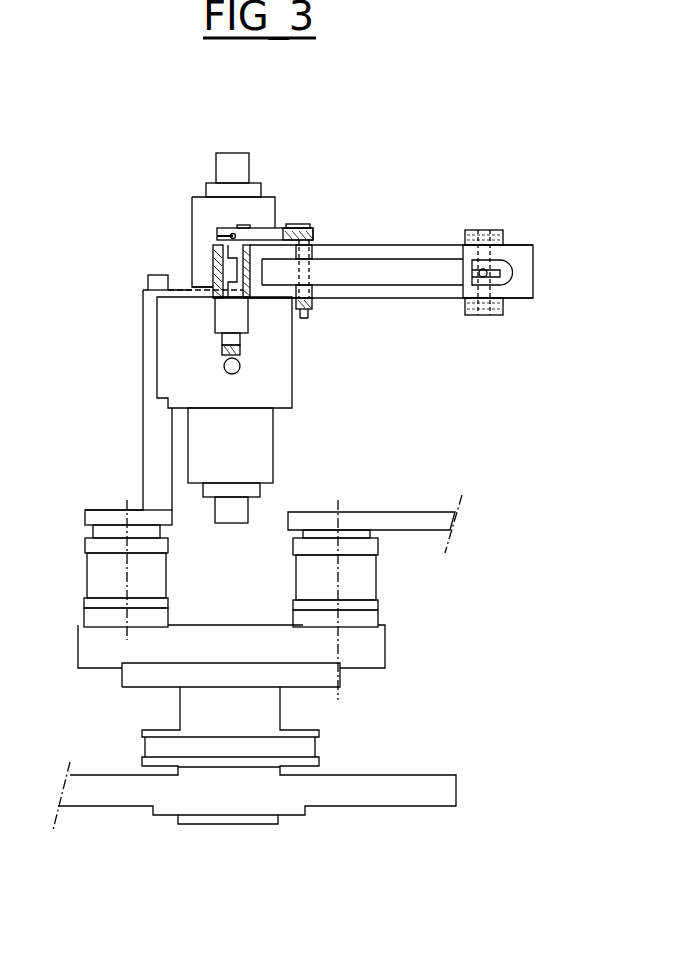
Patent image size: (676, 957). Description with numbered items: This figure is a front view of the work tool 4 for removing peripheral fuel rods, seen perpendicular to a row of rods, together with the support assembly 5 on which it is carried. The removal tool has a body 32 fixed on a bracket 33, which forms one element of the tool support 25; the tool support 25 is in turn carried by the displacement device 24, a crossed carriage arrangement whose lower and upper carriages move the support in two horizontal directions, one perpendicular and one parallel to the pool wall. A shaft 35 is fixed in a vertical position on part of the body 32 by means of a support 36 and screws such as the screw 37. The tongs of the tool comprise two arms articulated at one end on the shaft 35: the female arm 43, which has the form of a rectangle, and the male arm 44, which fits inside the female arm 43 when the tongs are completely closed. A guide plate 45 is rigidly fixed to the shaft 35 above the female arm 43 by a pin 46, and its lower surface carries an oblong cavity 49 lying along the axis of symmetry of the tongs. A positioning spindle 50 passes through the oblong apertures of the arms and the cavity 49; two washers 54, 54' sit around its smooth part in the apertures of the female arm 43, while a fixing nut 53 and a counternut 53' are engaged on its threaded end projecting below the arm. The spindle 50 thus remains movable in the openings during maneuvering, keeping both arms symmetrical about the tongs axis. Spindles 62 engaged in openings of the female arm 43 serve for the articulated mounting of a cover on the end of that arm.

The machining head assembly 4 is at (240, 134).
The support assembly 5 is at (465, 449).
The displacement device 24 is at (338, 743).
The tool support 25 is at (80, 520).
The body 32 is at (216, 406).
The bracket 33 is at (150, 482).
The shaft 35 is at (218, 318).
The support 36 is at (228, 340).
The screw 37 is at (240, 356).
The female arm 43 is at (527, 272).
The male arm 44 is at (433, 290).
The guide plate 45 is at (255, 235).
The pin 46 is at (228, 236).
The oblong cavity 49 is at (300, 230).
The positioning spindle 50 is at (308, 254).
The fixing nut 53 is at (331, 317).
The counternut 53' is at (321, 335).
The washer 54 is at (328, 228).
The washer 54' is at (335, 278).
The spindle 62 is at (481, 230).